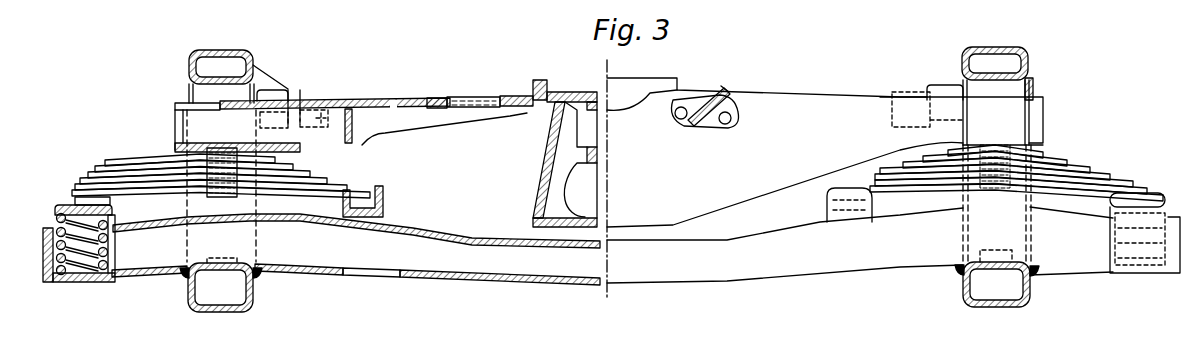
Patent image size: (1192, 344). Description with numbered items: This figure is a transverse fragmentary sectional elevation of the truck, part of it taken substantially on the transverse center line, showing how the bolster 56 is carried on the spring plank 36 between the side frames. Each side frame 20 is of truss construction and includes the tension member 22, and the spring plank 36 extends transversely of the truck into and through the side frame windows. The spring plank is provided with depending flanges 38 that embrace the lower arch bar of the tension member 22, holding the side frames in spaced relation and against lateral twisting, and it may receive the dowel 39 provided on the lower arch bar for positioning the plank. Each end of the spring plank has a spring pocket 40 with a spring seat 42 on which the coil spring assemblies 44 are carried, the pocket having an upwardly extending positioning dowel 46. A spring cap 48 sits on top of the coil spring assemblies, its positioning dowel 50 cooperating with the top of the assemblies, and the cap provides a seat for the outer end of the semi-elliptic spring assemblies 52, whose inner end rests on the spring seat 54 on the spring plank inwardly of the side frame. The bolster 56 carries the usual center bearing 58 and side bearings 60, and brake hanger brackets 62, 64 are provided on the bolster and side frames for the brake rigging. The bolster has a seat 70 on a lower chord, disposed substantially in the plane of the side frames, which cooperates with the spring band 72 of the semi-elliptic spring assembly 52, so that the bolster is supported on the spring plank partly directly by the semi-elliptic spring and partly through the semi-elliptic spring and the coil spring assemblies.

The side frame 20 is at (226, 50).
The tension member 22 is at (997, 307).
The spring plank 36 is at (512, 278).
The depending flanges 38 is at (185, 278).
The dowel 39 is at (223, 258).
The spring pocket 40 is at (52, 282).
The spring seat 42 is at (108, 280).
The coil spring assemblies 44 is at (57, 221).
The positioning dowel 46 is at (85, 282).
The spring cap 48 is at (60, 204).
The positioning dowel 50 is at (86, 200).
The semi-elliptic spring assemblies 52 is at (152, 158).
The spring seat 54 is at (380, 206).
The bolster 56 is at (432, 115).
The center bearing 58 is at (550, 93).
The side bearings 60 is at (380, 99).
The brake hanger bracket 62 is at (723, 88).
The brake hanger bracket 64 is at (288, 90).
The seat 70 is at (193, 145).
The spring band 72 is at (178, 143).